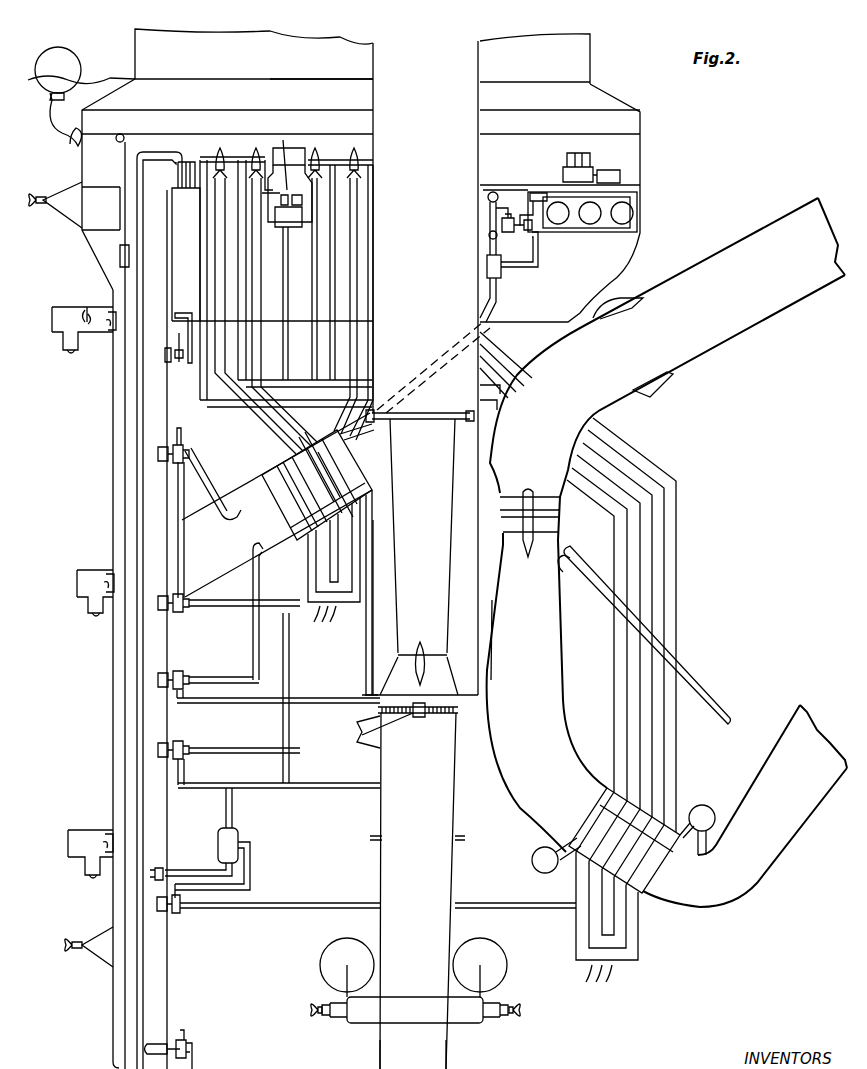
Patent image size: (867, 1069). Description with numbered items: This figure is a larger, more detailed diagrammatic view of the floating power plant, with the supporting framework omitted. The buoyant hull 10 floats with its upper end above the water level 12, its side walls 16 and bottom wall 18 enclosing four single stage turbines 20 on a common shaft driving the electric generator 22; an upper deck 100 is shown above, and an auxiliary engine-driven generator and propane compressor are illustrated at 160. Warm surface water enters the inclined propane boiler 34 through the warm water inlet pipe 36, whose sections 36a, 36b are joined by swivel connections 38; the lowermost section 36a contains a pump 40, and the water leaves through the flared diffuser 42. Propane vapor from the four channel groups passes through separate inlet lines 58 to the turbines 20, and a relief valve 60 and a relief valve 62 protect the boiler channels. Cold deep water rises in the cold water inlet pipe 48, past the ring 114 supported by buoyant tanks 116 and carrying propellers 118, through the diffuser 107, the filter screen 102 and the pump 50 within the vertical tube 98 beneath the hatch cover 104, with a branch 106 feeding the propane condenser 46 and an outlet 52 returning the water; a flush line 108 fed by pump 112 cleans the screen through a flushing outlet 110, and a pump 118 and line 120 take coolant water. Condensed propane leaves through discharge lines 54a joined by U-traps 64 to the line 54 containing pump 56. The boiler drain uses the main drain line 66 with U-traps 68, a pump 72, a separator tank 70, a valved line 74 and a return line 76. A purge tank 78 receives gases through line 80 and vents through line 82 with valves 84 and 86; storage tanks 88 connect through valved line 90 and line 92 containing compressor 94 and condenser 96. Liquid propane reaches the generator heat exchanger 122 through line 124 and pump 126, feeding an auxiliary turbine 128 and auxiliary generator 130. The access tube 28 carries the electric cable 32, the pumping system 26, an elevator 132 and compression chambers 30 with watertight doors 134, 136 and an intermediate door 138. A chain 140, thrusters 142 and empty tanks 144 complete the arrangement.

The buoyant hull 10 is at (108, 53).
The water level 12 is at (655, 90).
The side walls 16 is at (642, 177).
The bottom wall 18 is at (526, 322).
The turbines 20 is at (220, 148).
The electric generator 22 is at (300, 190).
The pumping system 26 is at (178, 368).
The access tube 28 is at (112, 452).
The compression chambers 30 is at (56, 306).
The electric cable 32 is at (176, 152).
The propane boiler 34 is at (650, 900).
The warm water inlet pipe 36 is at (600, 640).
The lowermost section 36a is at (556, 716).
The pipe section 36b is at (775, 320).
The swivel connections 38 is at (674, 386).
The pump 40 is at (538, 480).
The flared diffuser 42 is at (792, 844).
The propane condenser 46 is at (378, 474).
The cold water inlet pipe 48 is at (458, 1048).
The pump 50 is at (436, 646).
The outlet 52 is at (212, 604).
The line 54 is at (292, 726).
The discharge lines 54a is at (370, 560).
The pump 56 is at (188, 750).
The inlet lines 58 is at (624, 470).
The relief valve 60 is at (236, 250).
The relief valve 62 is at (712, 808).
The U-traps 64 is at (324, 625).
The main drain line 66 is at (326, 900).
The U-traps 68 is at (607, 927).
The separator tank 70 is at (218, 830).
The pump 72 is at (178, 905).
The valved line 74 is at (192, 868).
The line 76 is at (233, 818).
The purge tank 78 is at (486, 262).
The line 80 is at (497, 306).
The line 82 is at (487, 242).
The valve 84 is at (487, 198).
The valve 86 is at (488, 235).
The propane storage tanks 88 is at (634, 216).
The valved line 90 is at (540, 258).
The line 92 is at (638, 198).
The compressor 94 is at (508, 236).
The condenser 96 is at (533, 192).
The vertical tube 98 is at (375, 360).
The upper deck 100 is at (318, 80).
The filter screen 102 is at (440, 722).
The hatch cover 104 is at (458, 413).
The branch 106 is at (358, 437).
The diffuser 107 is at (446, 778).
The flush line 108 is at (326, 697).
The flushing outlet 110 is at (360, 738).
The pump 112 is at (185, 671).
The rigid ring 114 is at (364, 1024).
The buoyant tanks 116 is at (320, 975).
The propellers 118 is at (184, 458).
The line 120 is at (212, 480).
The heat exchanger 122 is at (290, 227).
The line 124 is at (288, 357).
The pump 126 is at (186, 612).
The turbine 128 is at (288, 148).
The auxiliary generator 130 is at (298, 180).
The elevator 132 is at (118, 262).
The watertight door 134 is at (110, 332).
The watertight door 136 is at (66, 354).
The intermediate watertight door 138 is at (87, 306).
The chain 140 is at (724, 694).
The propellers 142 is at (58, 216).
The empty tanks 144 is at (48, 47).
The auxiliary equipment 160 is at (606, 158).